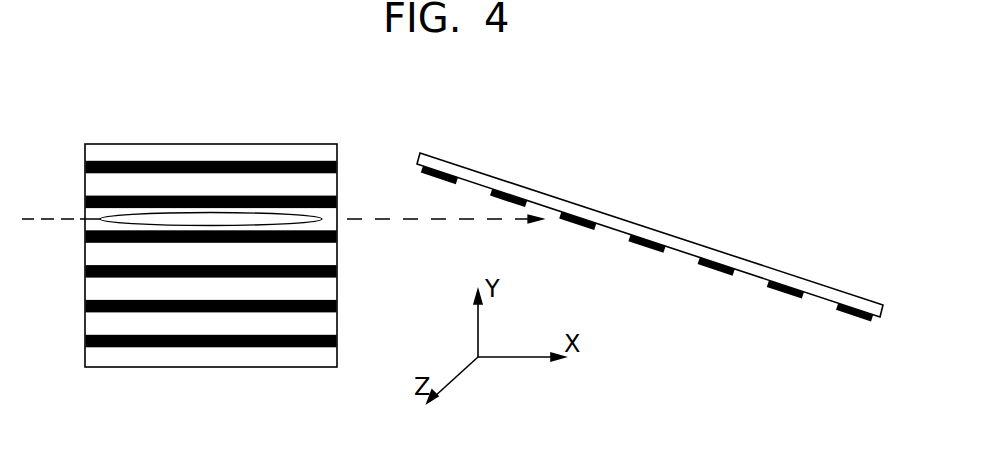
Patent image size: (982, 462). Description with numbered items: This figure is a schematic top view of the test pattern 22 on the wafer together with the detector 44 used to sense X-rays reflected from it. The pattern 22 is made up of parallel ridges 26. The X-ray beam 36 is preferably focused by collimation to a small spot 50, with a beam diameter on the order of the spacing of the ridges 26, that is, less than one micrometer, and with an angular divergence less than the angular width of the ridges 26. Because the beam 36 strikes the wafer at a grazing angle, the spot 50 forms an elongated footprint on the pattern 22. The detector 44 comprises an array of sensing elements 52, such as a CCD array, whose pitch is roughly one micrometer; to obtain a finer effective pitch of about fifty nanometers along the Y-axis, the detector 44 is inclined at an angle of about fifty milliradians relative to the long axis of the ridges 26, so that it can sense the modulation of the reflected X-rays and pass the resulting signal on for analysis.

The pattern 22 is at (227, 144).
The ridges 26 is at (85, 192).
The X-ray beam 36 is at (48, 219).
The spot 50 is at (292, 228).
The detector 44 is at (718, 252).
The sensing elements 52 is at (565, 214).